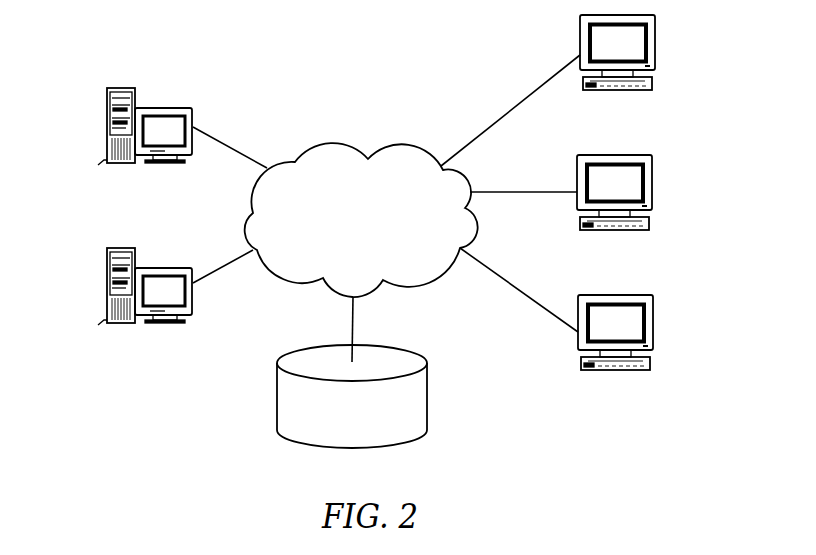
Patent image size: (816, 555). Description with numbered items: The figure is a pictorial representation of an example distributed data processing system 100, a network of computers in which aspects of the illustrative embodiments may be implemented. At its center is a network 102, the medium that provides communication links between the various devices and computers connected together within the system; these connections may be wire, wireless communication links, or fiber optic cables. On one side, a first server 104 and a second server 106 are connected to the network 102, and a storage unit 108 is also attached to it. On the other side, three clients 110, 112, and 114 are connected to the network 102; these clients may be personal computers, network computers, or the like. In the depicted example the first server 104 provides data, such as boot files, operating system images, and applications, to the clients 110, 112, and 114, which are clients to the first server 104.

The distributed data processing system 100 is at (437, 60).
The network 102 is at (348, 146).
The first server 104 is at (107, 128).
The second server 106 is at (107, 288).
The storage unit 108 is at (277, 393).
The client 110 is at (655, 52).
The client 112 is at (653, 190).
The client 114 is at (655, 333).